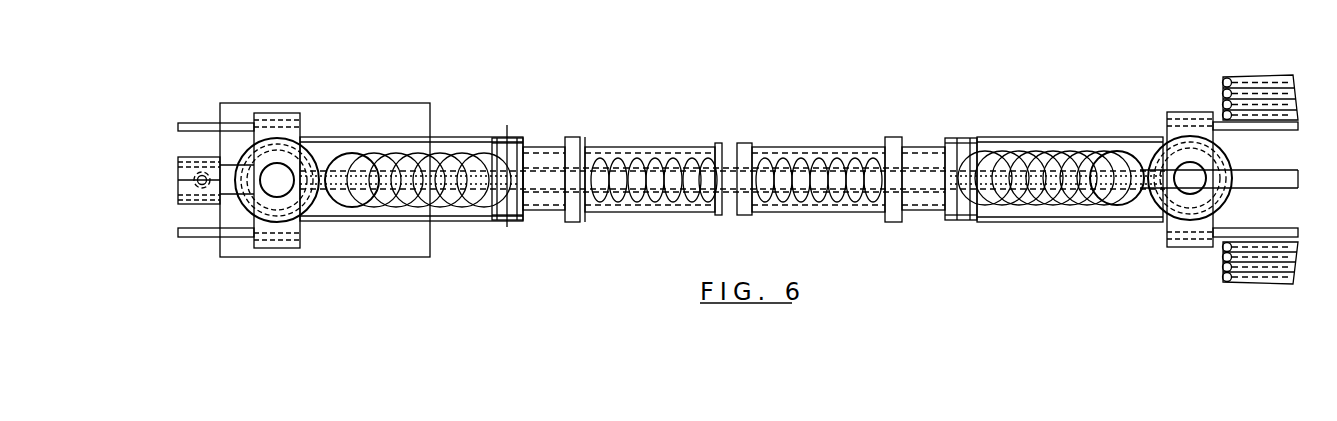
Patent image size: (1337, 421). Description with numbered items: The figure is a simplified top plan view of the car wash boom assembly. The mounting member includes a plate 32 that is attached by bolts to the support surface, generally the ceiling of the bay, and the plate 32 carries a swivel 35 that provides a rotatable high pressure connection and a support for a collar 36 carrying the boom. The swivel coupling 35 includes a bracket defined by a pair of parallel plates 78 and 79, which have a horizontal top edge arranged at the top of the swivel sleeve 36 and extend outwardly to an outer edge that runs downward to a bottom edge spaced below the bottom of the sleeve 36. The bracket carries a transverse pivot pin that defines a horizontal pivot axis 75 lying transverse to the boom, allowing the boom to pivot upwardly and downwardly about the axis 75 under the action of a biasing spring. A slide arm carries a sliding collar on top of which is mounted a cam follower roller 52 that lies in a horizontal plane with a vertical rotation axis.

The plate 32 is at (408, 102).
The cam follower roller 52 is at (183, 180).
The collar 36 is at (302, 210).
The swivel 35 is at (240, 207).
The plate 79 is at (452, 222).
The plate 78 is at (480, 135).
The pivot axis 75 is at (503, 233).